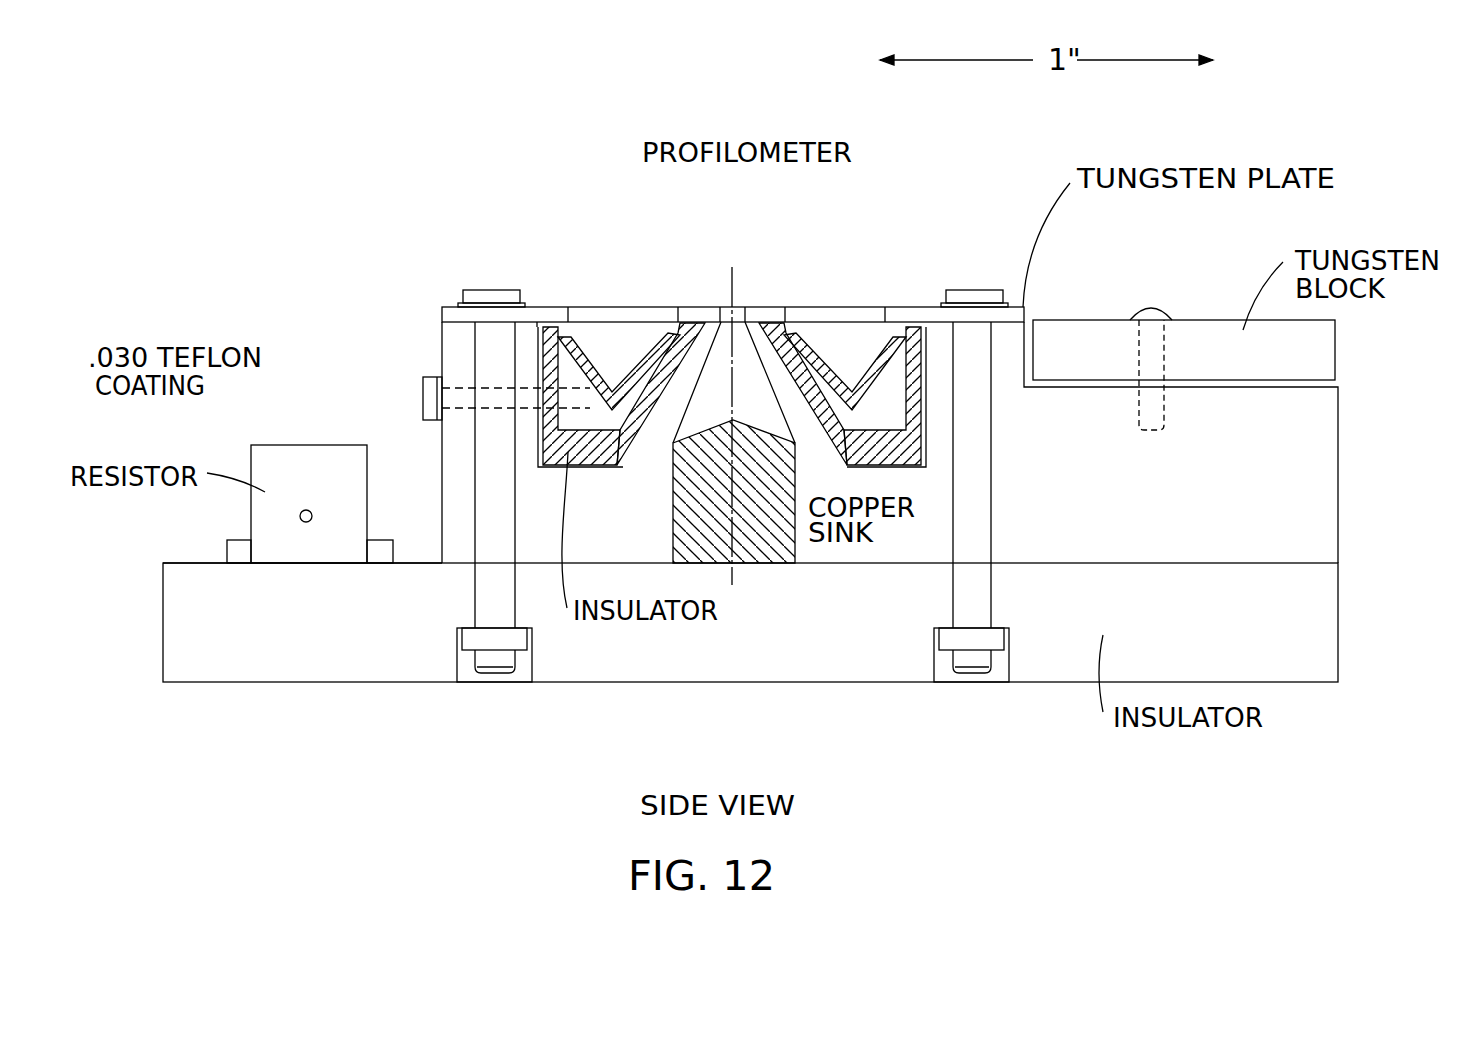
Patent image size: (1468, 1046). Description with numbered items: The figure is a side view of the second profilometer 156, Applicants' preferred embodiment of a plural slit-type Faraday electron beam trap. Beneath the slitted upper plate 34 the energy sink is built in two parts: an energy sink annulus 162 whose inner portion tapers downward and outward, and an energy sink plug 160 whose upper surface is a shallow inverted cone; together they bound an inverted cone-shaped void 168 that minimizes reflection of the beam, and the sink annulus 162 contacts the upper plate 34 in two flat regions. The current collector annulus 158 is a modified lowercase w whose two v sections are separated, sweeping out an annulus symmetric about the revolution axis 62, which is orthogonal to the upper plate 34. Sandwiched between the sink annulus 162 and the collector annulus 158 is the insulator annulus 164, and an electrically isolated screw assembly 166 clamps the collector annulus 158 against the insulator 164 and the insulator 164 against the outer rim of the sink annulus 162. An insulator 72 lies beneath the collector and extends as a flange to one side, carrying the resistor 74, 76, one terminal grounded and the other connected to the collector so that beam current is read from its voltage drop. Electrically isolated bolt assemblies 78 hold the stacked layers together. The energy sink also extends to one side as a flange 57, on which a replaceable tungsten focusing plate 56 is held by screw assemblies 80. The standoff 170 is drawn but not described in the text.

The second profilometer 156 is at (320, 323).
The upper plate 34 is at (556, 307).
The standoff post 170 is at (457, 347).
The electrically isolated bolt assemblies 78 is at (491, 288).
The insulator annulus 164 is at (913, 327).
The energy sink annulus 162 is at (713, 323).
The current collector annulus 158 is at (588, 397).
The inverted solid cone-shaped void 168 is at (747, 385).
The energy sink plug 160 is at (780, 545).
The revolution axis 62 is at (733, 295).
The screw assembly 166 is at (421, 393).
The insulator 72 is at (697, 665).
The resistor 74 is at (182, 562).
The resistor 76 is at (343, 476).
The flange 57 is at (1318, 444).
The replaceable plate 56 is at (1312, 342).
The screw assemblies 80 is at (1143, 310).